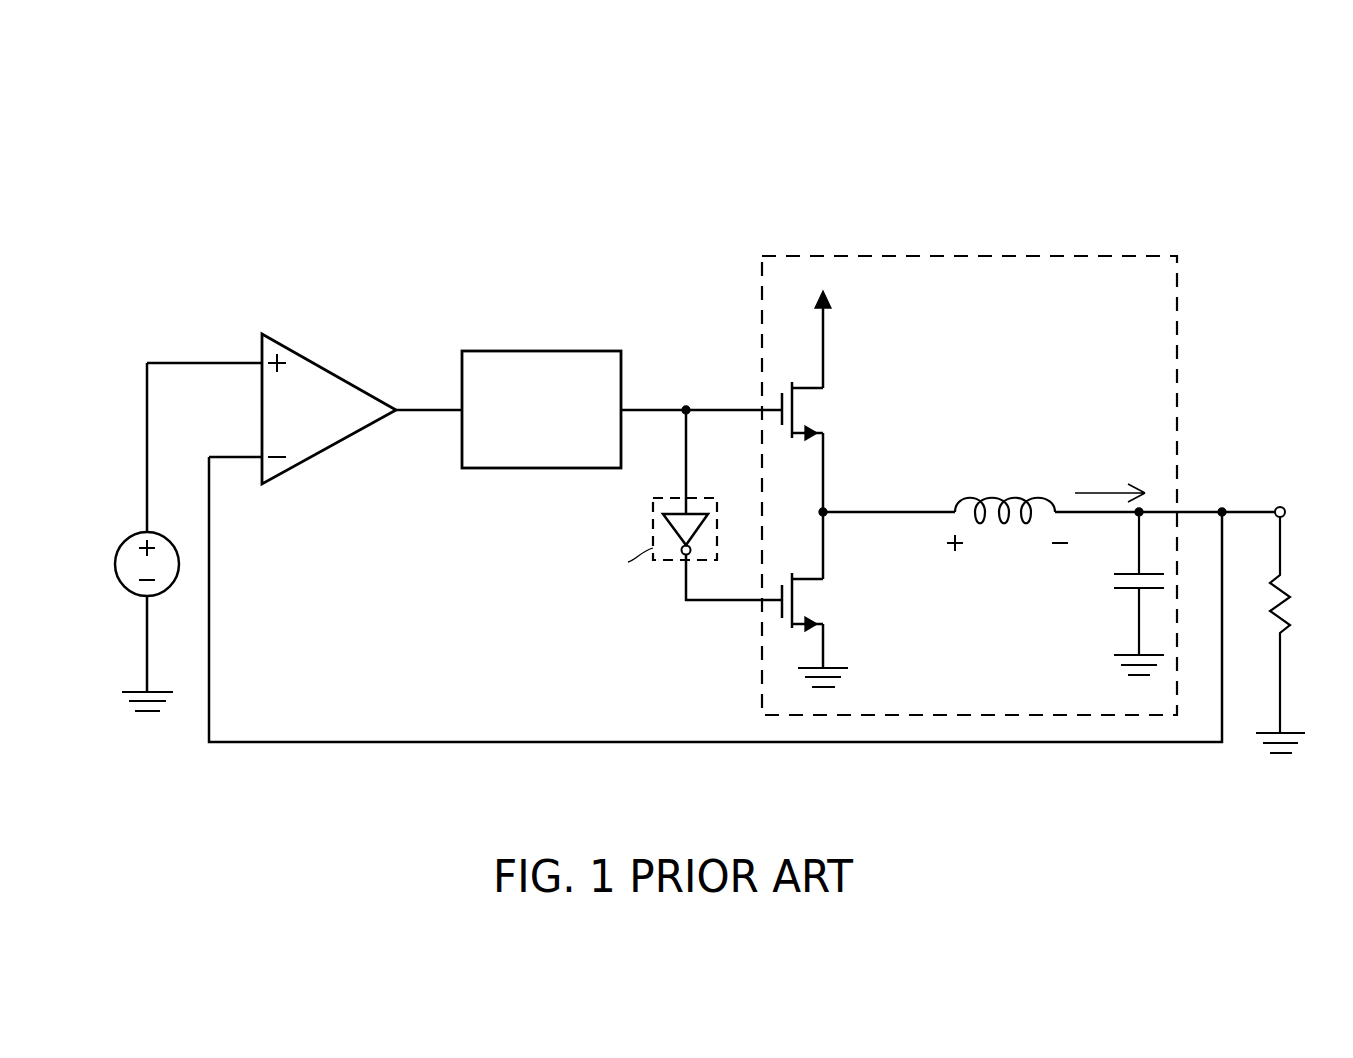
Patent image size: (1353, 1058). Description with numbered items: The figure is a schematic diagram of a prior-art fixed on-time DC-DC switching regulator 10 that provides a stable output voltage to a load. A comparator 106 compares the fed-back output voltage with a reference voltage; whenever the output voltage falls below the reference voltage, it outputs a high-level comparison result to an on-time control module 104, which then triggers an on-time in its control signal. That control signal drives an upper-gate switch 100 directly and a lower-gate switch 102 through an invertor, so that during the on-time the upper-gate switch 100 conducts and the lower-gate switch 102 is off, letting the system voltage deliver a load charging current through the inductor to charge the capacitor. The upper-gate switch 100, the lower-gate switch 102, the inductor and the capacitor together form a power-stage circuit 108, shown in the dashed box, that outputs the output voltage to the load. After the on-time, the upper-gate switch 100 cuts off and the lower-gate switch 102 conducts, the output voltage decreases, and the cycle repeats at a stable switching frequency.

The fixed on-time DC-DC switching regulator 10 is at (1218, 197).
The upper-gate switch 100 is at (833, 405).
The lower-gate switch 102 is at (833, 608).
The on-time control module 104 is at (541, 468).
The comparator 106 is at (343, 437).
The power-stage circuit 108 is at (960, 256).